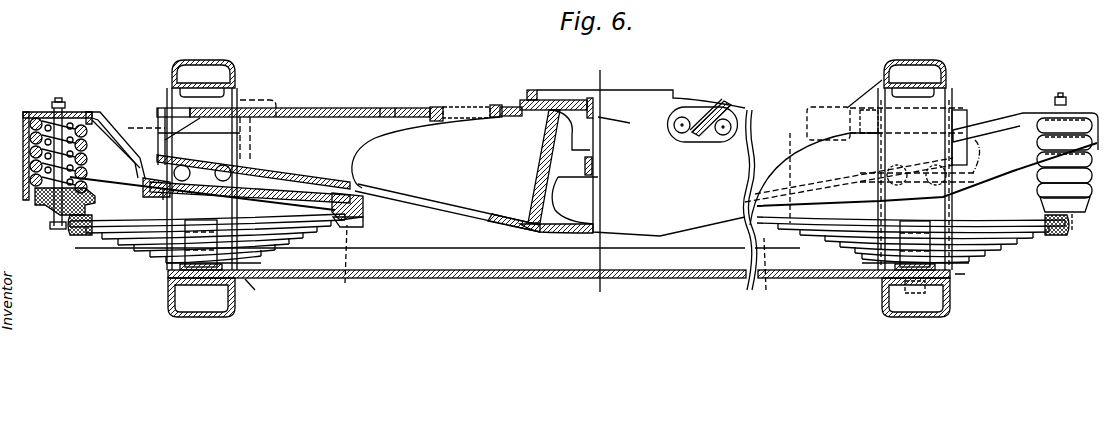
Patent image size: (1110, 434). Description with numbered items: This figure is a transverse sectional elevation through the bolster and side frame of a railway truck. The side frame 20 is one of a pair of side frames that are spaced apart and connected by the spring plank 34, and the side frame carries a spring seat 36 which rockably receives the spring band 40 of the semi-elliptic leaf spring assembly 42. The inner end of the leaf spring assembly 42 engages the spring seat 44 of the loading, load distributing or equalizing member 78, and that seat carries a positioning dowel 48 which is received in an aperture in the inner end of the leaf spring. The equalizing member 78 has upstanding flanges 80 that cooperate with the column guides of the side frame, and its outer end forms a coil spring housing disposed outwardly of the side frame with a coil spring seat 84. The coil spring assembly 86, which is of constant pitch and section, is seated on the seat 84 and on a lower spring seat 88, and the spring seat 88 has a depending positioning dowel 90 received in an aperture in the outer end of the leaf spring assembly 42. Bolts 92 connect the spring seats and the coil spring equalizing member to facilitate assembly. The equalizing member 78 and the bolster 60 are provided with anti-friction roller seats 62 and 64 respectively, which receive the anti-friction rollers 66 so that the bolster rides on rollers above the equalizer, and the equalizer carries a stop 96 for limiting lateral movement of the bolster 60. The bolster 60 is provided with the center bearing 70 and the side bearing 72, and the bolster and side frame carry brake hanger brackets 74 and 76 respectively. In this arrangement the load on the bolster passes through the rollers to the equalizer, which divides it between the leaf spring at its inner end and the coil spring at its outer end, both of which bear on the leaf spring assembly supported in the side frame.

The side frame 20 is at (210, 60).
The spring plank 34 is at (493, 279).
The spring seat 36 is at (616, 286).
The spring band 40 is at (200, 240).
The semi-elliptic leaf spring assembly 42 is at (135, 240).
The spring seat 44 is at (365, 207).
The positioning dowel 48 is at (557, 268).
The bolster 60 is at (432, 107).
The anti-friction roller seat 62 is at (172, 190).
The anti-friction roller seat 64 is at (188, 163).
The anti-friction rollers 66 is at (238, 160).
The center bearing 70 is at (560, 100).
The side bearing 72 is at (362, 108).
The brake hanger bracket 74 is at (724, 100).
The brake hanger bracket 76 is at (836, 107).
The equalizing member 78 is at (130, 127).
The upstanding flanges 80 is at (148, 125).
The coil spring seat 84 is at (74, 112).
The coil spring assembly 86 is at (40, 160).
The spring seat 88 is at (88, 198).
The positioning dowel 90 is at (54, 228).
The bolts 92 is at (56, 100).
The stop 96 is at (140, 170).